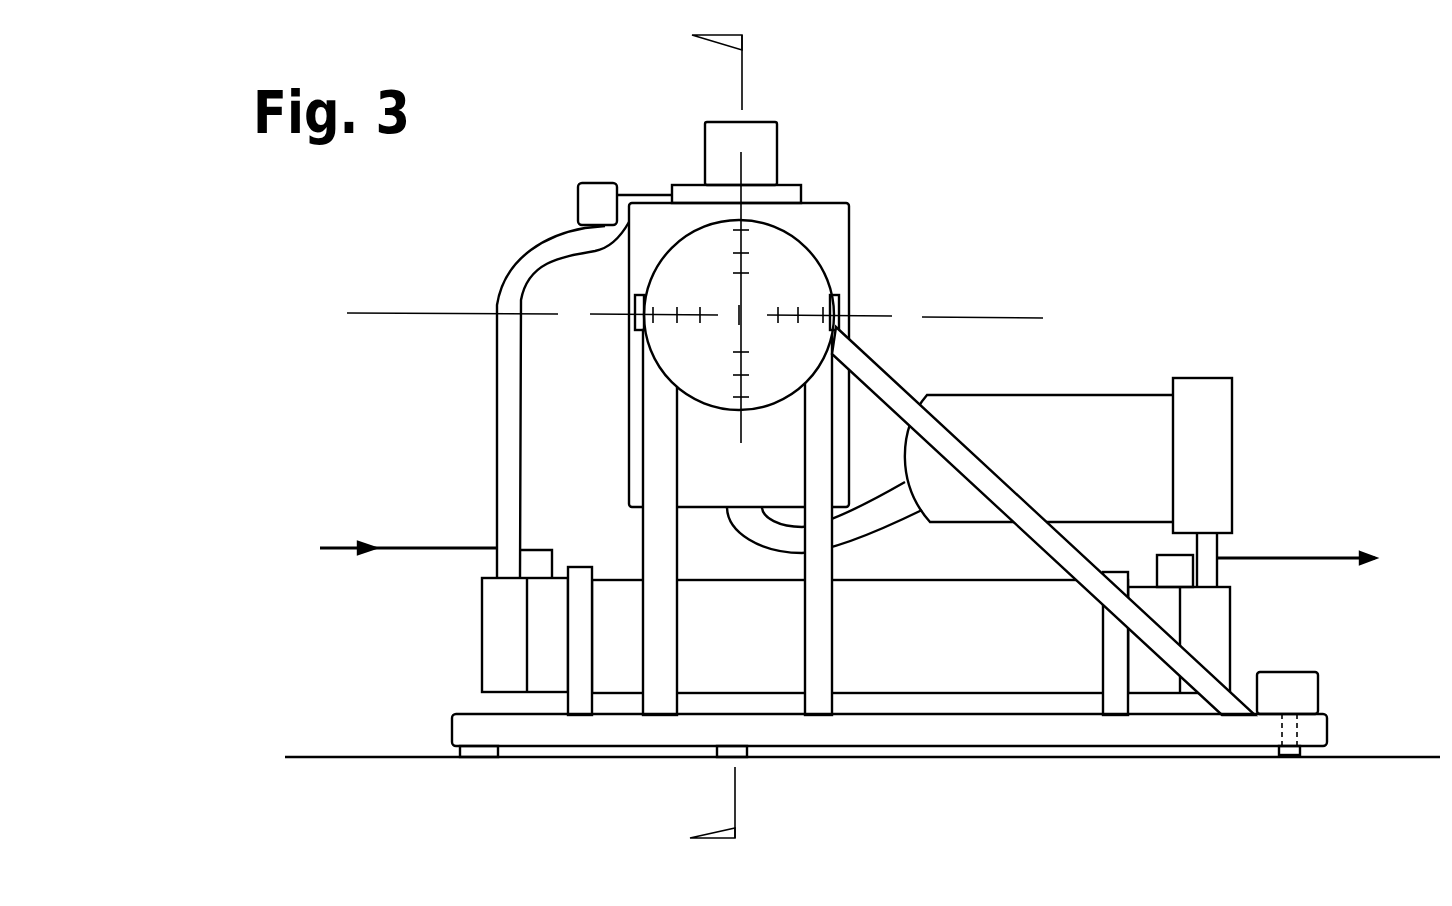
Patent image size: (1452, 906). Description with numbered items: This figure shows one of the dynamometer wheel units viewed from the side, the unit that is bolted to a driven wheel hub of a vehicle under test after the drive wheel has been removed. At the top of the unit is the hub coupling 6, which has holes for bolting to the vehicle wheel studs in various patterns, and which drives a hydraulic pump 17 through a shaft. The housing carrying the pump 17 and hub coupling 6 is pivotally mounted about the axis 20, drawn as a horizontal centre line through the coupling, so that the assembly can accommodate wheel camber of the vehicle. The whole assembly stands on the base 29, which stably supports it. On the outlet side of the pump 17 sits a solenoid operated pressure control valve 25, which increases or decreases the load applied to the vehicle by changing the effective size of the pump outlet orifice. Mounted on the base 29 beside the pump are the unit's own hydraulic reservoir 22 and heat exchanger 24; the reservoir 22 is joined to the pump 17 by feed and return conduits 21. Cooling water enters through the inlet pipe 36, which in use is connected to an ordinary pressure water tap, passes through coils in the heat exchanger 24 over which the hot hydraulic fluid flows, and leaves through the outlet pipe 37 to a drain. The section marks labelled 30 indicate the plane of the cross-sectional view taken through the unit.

The hub coupling 6 is at (881, 433).
The hydraulic pump 17 is at (865, 192).
The axis 20 is at (696, 316).
The feed and return conduits 21 is at (517, 278).
The reservoir 22 is at (1082, 425).
The heat exchanger 24 is at (1010, 640).
The solenoid operated pressure control valve 25 is at (688, 183).
The base 29 is at (967, 727).
The section line 30 is at (691, 443).
The inlet pipe 36 is at (425, 547).
The outlet pipe 37 is at (1265, 557).